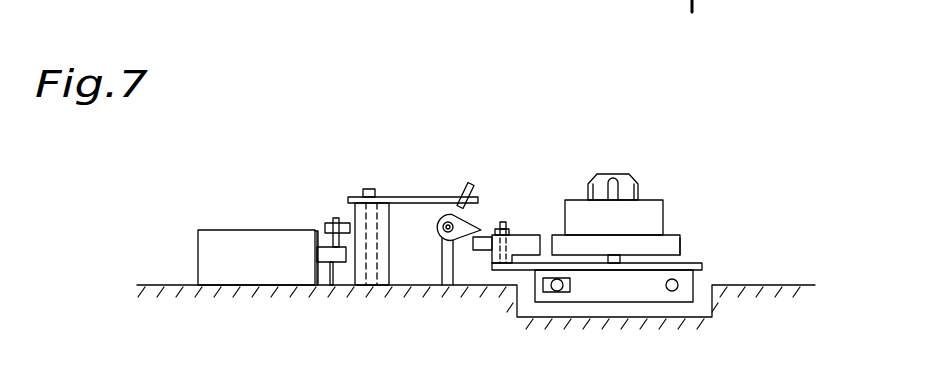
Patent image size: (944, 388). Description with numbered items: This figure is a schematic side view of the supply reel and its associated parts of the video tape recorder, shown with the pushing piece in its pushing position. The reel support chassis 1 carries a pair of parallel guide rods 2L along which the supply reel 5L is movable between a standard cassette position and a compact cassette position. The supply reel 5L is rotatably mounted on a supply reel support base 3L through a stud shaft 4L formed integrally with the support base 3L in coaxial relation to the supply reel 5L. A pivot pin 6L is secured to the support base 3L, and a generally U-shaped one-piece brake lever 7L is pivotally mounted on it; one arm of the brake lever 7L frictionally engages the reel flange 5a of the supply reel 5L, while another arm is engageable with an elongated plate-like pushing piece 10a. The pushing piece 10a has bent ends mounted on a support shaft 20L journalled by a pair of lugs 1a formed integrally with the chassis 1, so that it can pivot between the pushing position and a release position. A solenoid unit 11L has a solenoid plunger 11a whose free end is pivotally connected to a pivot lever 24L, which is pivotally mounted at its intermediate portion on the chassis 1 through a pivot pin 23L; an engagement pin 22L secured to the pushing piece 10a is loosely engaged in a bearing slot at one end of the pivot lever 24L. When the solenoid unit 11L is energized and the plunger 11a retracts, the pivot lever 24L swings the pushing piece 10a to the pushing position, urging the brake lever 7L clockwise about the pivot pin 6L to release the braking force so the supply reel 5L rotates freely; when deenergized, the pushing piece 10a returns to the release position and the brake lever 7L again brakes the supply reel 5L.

The reel support chassis 1 is at (773, 285).
The lugs 1a is at (454, 266).
The parallel guide rods 2L is at (672, 291).
The supply reel support base 3L is at (700, 263).
The stud shaft 4L is at (615, 258).
The supply reel 5L is at (653, 204).
The reel flange 5a is at (682, 243).
The pivot pin 6L is at (500, 222).
The brake lever 7L is at (530, 235).
The plate-like pushing piece 10a is at (441, 213).
The solenoid unit 11L is at (268, 230).
The solenoid plunger 11a is at (330, 287).
The support shaft 20L is at (445, 237).
The engagement pin 22L is at (470, 187).
The pivot pin 23L is at (365, 189).
The pivot lever 24L is at (417, 197).